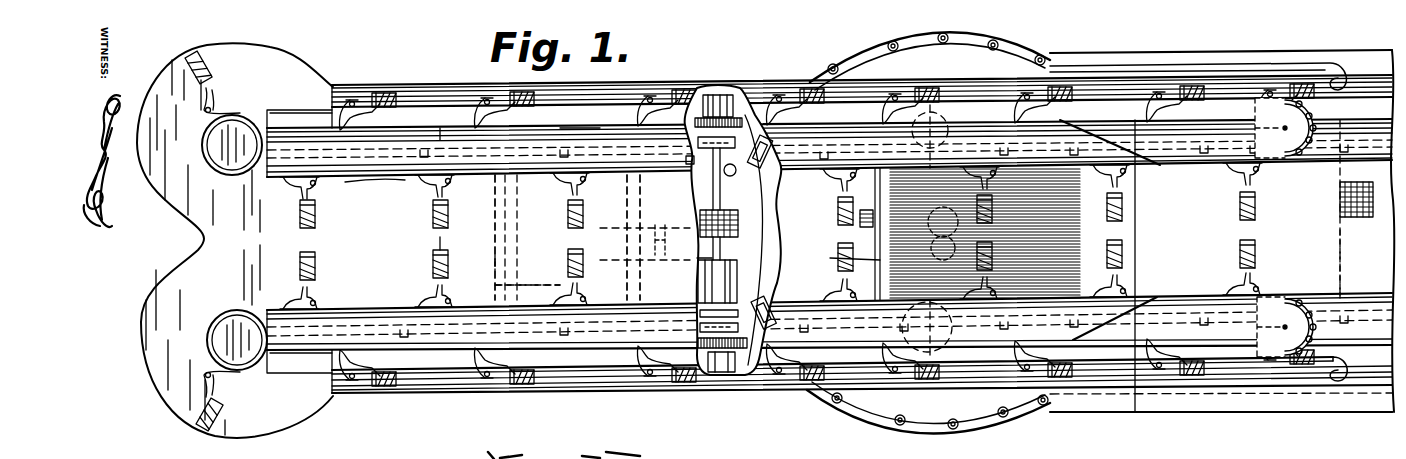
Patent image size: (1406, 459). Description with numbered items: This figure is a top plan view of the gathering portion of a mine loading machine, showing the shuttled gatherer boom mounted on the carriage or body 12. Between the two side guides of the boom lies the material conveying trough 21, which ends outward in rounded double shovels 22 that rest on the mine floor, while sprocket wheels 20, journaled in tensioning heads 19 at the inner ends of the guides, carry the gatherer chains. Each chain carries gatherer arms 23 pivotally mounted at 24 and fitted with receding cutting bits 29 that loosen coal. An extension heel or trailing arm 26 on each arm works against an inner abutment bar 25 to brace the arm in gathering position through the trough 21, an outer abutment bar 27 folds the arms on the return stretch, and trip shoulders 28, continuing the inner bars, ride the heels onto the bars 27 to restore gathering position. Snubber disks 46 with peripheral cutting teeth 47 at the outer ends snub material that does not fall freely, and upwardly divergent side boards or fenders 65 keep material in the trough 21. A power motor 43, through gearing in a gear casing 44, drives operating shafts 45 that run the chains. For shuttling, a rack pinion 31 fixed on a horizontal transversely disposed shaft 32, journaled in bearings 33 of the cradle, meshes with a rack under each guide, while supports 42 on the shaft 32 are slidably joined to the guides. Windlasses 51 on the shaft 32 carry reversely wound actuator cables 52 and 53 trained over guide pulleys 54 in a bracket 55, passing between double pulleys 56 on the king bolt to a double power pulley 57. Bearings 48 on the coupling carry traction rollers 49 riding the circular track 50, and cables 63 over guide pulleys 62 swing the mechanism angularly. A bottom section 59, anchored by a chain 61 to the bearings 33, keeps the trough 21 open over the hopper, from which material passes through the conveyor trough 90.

The carriage or body 12 is at (1198, 413).
The tensioning heads 19 is at (1280, 162).
The sprocket wheels 20 is at (1303, 150).
The material conveying trough 21 is at (433, 237).
The rounded double shovels 22 is at (170, 273).
The gatherer arms 23 is at (300, 238).
The pivot 24 is at (400, 184).
The abutment bar 25 is at (640, 226).
The extension heel or trailing arm 26 is at (420, 300).
The abutment bar 27 is at (1347, 81).
The trip shoulders 28 is at (287, 124).
The cutting bits 29 is at (447, 240).
The rack pinion 31 is at (696, 121).
The horizontal transversely disposed shaft 32 is at (733, 373).
The bearings 33 is at (719, 94).
The supports 42 is at (697, 142).
The power motor 43 is at (505, 286).
The gear casing 44 is at (496, 263).
The operating shafts 45 is at (455, 134).
The snubber disks 46 is at (226, 160).
The peripheral cutting teeth 47 is at (202, 145).
The bearings 48 is at (768, 312).
The traction rollers 49 is at (770, 166).
The circular track 50 is at (870, 418).
The windlasses 51 is at (706, 212).
The actuator cable 52 is at (700, 225).
The actuator cable 53 is at (696, 270).
The guide pulleys 54 is at (655, 240).
The bracket 55 is at (700, 188).
The double pulleys 56 is at (965, 237).
The double power pulley 57 is at (1356, 220).
The bottom section 59 is at (841, 255).
The chain 61 is at (679, 157).
The guide pulleys 62 is at (936, 36).
The cables 63 is at (856, 58).
The side boards or fenders 65 is at (566, 346).
The trough 90 is at (1312, 260).